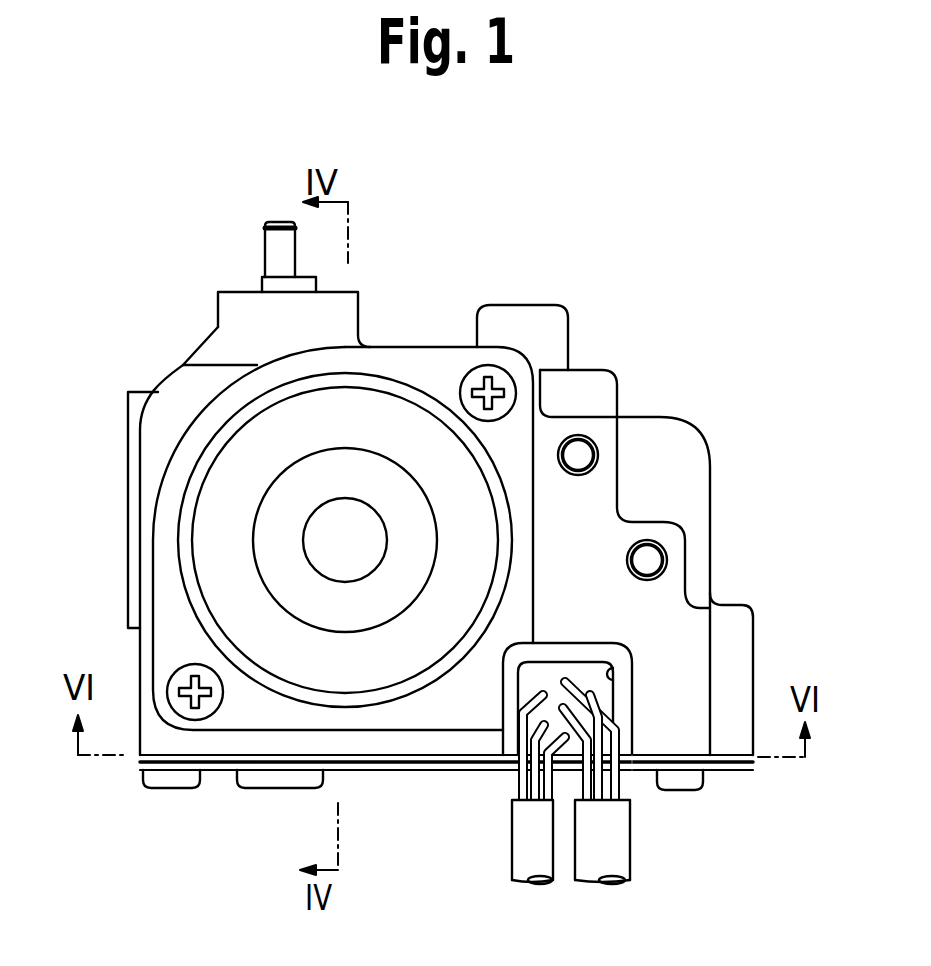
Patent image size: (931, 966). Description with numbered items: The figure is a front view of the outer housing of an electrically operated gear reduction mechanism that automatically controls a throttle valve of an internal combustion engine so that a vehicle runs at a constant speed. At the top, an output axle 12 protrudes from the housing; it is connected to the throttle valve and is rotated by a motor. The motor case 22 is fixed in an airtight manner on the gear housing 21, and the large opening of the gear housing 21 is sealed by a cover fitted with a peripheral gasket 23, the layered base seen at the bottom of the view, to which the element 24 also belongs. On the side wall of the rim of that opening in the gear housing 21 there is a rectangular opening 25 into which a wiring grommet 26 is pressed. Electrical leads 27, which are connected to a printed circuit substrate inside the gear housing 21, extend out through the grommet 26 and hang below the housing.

The output axle 12 is at (265, 247).
The gear housing 21 is at (660, 598).
The motor case 22 is at (405, 383).
The peripheral gasket 23 is at (462, 764).
The base plate layer 24 is at (393, 768).
The rectangular opening 25 is at (614, 685).
The wiring grommet 26 is at (572, 753).
The electrical leads 27 is at (626, 779).